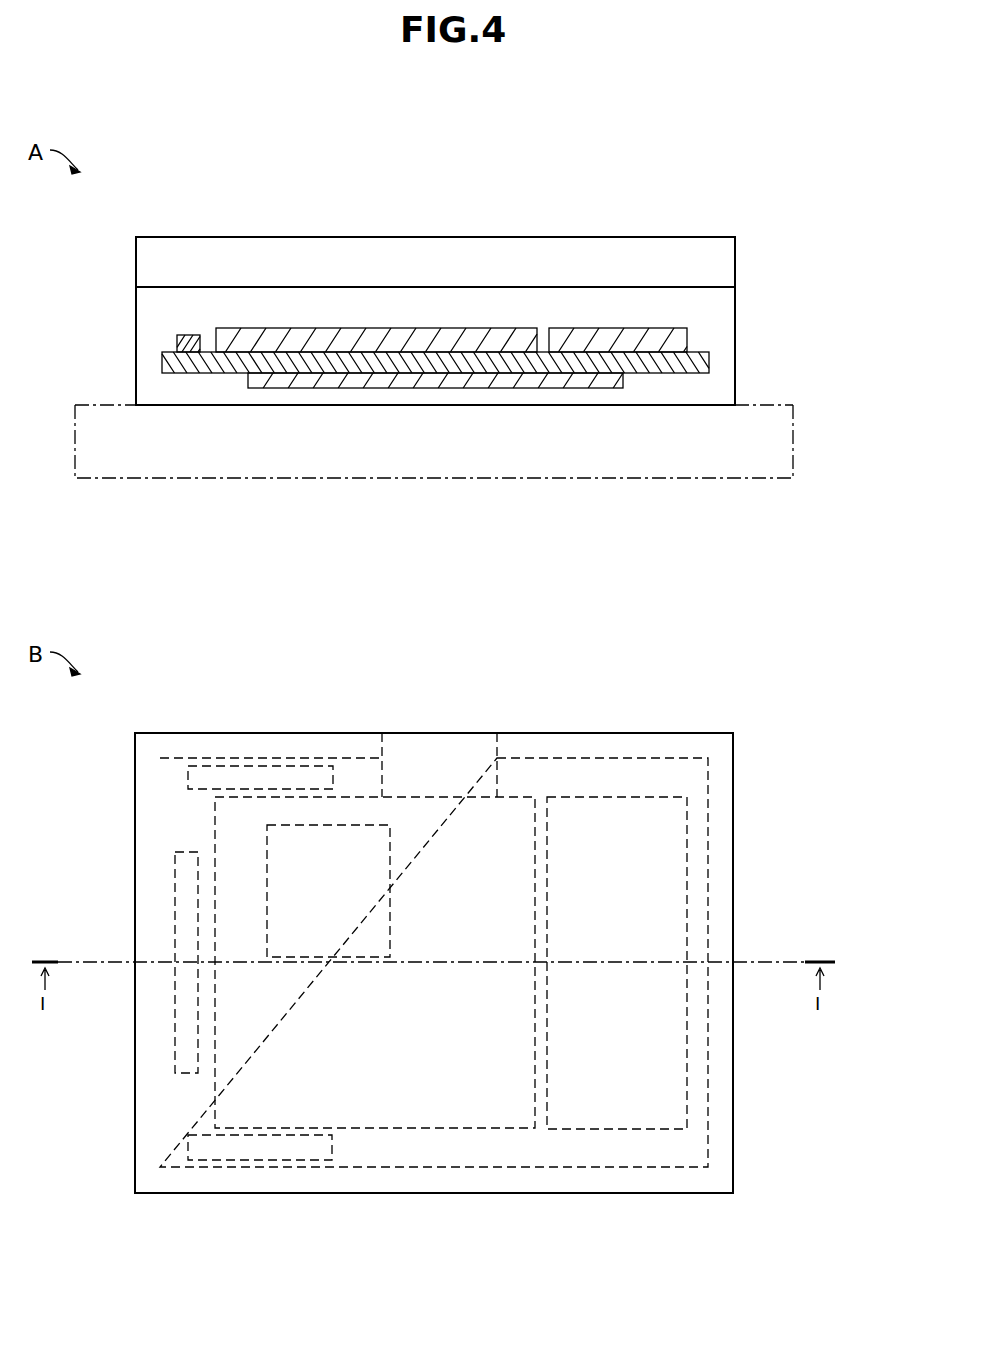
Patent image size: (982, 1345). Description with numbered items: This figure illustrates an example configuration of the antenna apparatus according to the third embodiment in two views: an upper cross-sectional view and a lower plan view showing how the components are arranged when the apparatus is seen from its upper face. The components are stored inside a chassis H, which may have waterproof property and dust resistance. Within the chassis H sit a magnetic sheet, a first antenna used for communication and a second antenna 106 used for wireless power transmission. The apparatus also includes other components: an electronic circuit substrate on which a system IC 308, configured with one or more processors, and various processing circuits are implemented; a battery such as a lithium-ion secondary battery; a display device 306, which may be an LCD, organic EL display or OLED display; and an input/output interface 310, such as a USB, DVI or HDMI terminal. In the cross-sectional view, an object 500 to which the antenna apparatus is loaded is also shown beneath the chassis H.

The display device 306 is at (690, 243).
The chassis H is at (736, 312).
The second antenna 106 is at (623, 380).
The object 500 is at (793, 435).
The system IC 308 is at (353, 843).
The input/output interface 310 is at (431, 747).